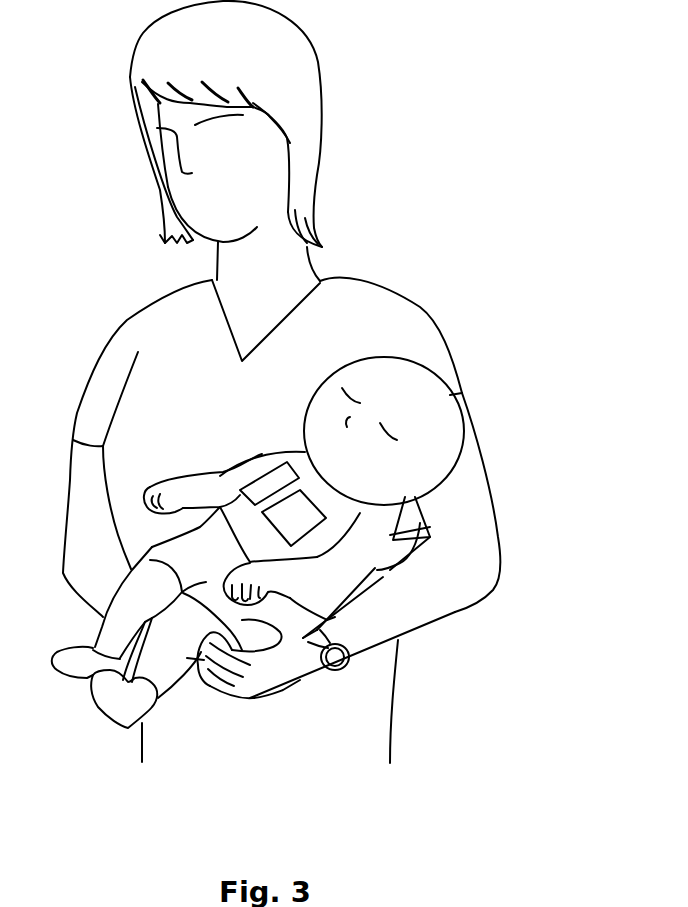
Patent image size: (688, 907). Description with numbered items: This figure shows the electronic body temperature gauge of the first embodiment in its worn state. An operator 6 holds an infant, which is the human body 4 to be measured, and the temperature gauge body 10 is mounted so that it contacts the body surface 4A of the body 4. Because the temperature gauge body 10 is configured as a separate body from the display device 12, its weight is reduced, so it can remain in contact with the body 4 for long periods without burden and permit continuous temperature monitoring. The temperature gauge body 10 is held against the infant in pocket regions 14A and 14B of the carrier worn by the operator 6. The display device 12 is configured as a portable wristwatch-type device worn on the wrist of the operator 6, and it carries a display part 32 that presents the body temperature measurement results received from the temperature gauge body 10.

The human body 4 is at (361, 522).
The body surface 4A is at (292, 452).
The operator 6 is at (398, 308).
The temperature gauge body 10 is at (361, 533).
The display device 12 is at (313, 672).
The pocket housing sensor 14A is at (260, 483).
The pocket housing sensor 14B is at (303, 520).
The display part 32 is at (338, 673).